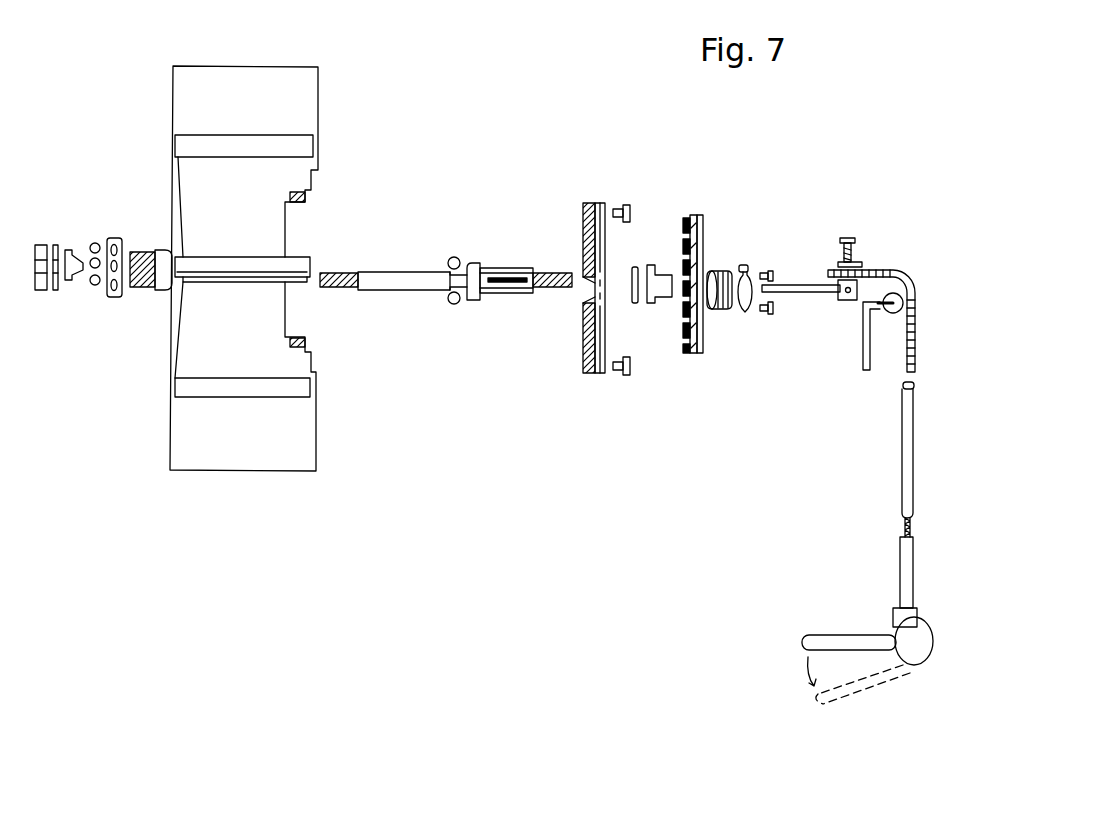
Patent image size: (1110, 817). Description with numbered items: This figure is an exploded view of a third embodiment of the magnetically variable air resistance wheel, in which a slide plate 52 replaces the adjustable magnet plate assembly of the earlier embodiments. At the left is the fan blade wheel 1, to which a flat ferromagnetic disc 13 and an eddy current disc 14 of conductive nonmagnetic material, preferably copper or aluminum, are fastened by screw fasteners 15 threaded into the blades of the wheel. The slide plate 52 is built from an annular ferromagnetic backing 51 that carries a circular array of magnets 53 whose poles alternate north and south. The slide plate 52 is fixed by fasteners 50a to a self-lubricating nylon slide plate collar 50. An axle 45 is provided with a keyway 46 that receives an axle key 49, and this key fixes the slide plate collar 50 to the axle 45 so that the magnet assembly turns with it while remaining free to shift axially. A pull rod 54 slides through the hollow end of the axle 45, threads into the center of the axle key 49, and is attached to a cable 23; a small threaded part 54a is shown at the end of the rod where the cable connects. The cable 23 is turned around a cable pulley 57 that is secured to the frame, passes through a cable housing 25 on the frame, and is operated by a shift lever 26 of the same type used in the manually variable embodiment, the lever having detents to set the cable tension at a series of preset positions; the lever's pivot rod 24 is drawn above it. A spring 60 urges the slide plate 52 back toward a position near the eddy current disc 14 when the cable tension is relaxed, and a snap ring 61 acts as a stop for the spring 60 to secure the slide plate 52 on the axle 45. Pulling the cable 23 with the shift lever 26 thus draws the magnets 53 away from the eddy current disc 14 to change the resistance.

The fan blade wheel 1 is at (193, 435).
The axle 45 is at (390, 278).
The keyway 46 is at (509, 286).
The ferromagnetic disc 13 is at (585, 217).
The eddy current disc 14 is at (600, 203).
The screw fasteners 15 is at (625, 370).
The axle key 49 is at (636, 267).
The slide plate collar 50 is at (662, 276).
The fasteners 50a is at (766, 272).
The annular ferromagnetic backing 51 is at (692, 356).
The slide plate 52 is at (698, 354).
The magnets 53 is at (687, 216).
The pull rod 54 is at (813, 293).
The adjusting screw 54a is at (850, 238).
The cable pulley 57 is at (865, 368).
The spring 60 is at (720, 313).
The snap ring 61 is at (745, 315).
The cable 23 is at (880, 270).
The lever rod 24 is at (902, 387).
The cable housing 25 is at (905, 485).
The shift lever 26 is at (828, 645).